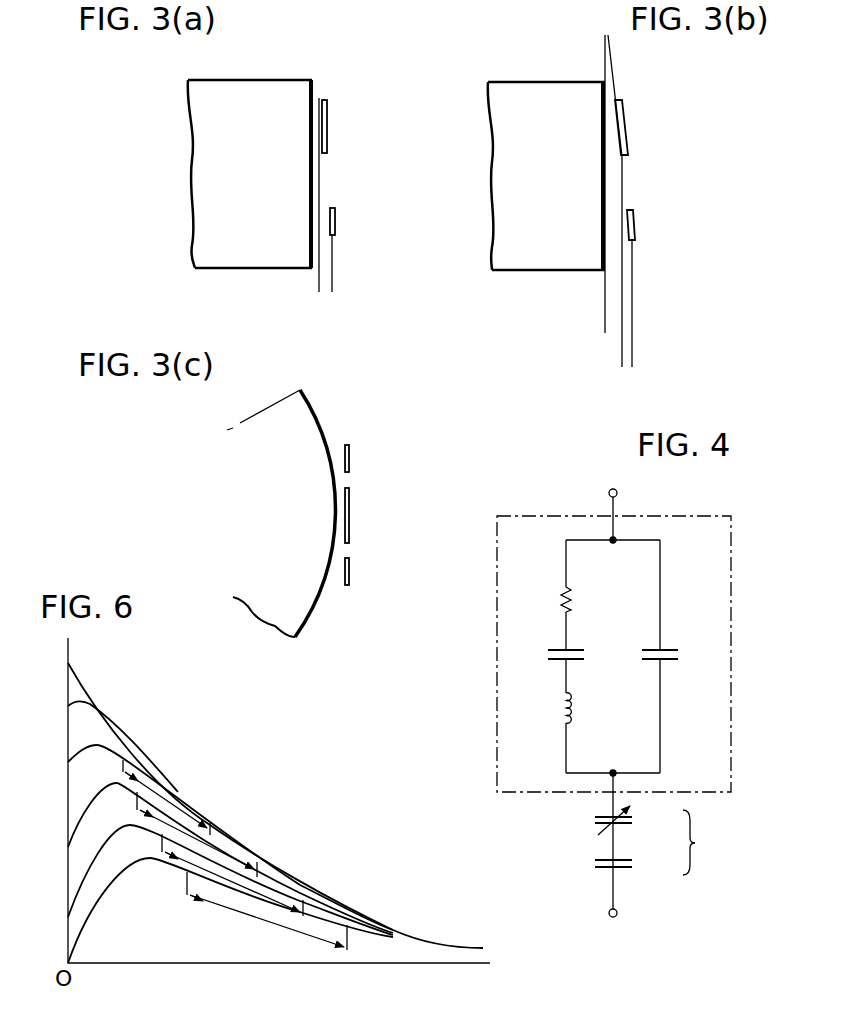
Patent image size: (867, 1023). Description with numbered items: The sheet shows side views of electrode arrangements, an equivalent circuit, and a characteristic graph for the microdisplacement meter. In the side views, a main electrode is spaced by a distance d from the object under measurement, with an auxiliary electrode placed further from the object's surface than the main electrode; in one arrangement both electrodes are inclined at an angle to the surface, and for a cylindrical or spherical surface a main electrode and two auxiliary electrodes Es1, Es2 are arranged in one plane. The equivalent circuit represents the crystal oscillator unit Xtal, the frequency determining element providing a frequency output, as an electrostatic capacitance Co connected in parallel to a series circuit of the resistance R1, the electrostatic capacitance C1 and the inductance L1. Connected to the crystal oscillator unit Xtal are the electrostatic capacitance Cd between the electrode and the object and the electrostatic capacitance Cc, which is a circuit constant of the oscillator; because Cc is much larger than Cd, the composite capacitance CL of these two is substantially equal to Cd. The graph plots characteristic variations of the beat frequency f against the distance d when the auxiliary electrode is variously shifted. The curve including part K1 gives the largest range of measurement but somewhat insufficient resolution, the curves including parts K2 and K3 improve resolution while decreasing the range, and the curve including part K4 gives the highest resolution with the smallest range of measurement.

The auxiliary electrode Es1 is at (402, 458).
The auxiliary electrode Es2 is at (402, 570).
In FIG. 6, the distance d is at (333, 995).
In FIG. 4, the resistance R1 is at (563, 605).
In FIG. 4, the electrostatic capacitance C1 is at (548, 655).
In FIG. 4, the inductance L1 is at (560, 713).
In FIG. 4, the electrostatic capacitance Co is at (678, 655).
In FIG. 4, the crystal oscillator unit Xtal is at (643, 640).
In FIG. 4, the electrostatic capacitance Cd is at (633, 820).
In FIG. 4, the electrostatic capacitance Cc is at (632, 862).
In FIG. 4, the composite capacitance CL is at (702, 842).
In FIG. 6, the part of characteristic curve K1 is at (197, 892).
In FIG. 6, the part of characteristic curve K2 is at (258, 887).
In FIG. 6, the part of characteristic curve K3 is at (210, 847).
In FIG. 6, the part of characteristic curve K4 is at (150, 782).
In FIG. 6, the beat frequency f is at (34, 712).